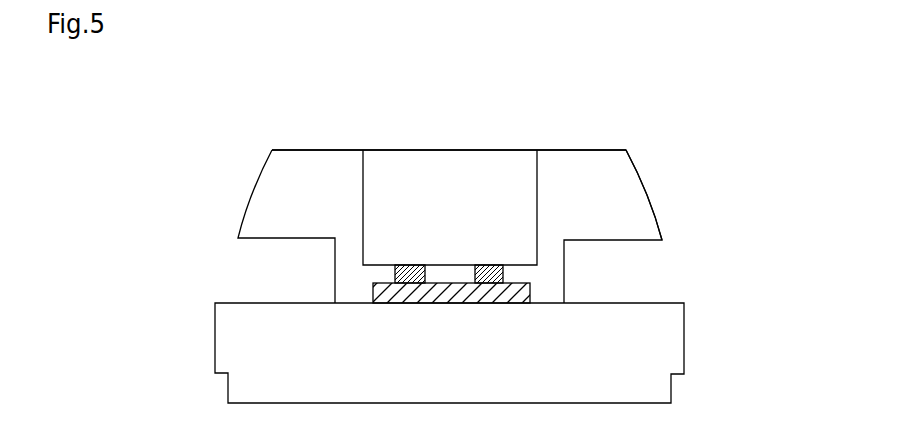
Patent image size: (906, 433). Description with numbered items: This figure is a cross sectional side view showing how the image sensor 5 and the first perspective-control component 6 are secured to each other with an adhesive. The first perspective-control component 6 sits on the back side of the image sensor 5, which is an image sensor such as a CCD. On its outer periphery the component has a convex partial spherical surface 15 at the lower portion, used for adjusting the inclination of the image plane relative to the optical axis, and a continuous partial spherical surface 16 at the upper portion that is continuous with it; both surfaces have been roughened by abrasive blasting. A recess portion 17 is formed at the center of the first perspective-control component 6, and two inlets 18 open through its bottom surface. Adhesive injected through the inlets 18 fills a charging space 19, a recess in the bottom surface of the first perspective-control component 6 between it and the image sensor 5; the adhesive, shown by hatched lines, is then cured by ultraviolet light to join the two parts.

The image sensor 5 is at (215, 352).
The first perspective-control component 6 is at (252, 192).
The convex partial spherical surface 15 is at (660, 225).
The continuous partial spherical surface 16 is at (638, 168).
The recess portion 17 is at (478, 168).
The inlets 18 is at (488, 265).
The charging space 19 is at (448, 303).